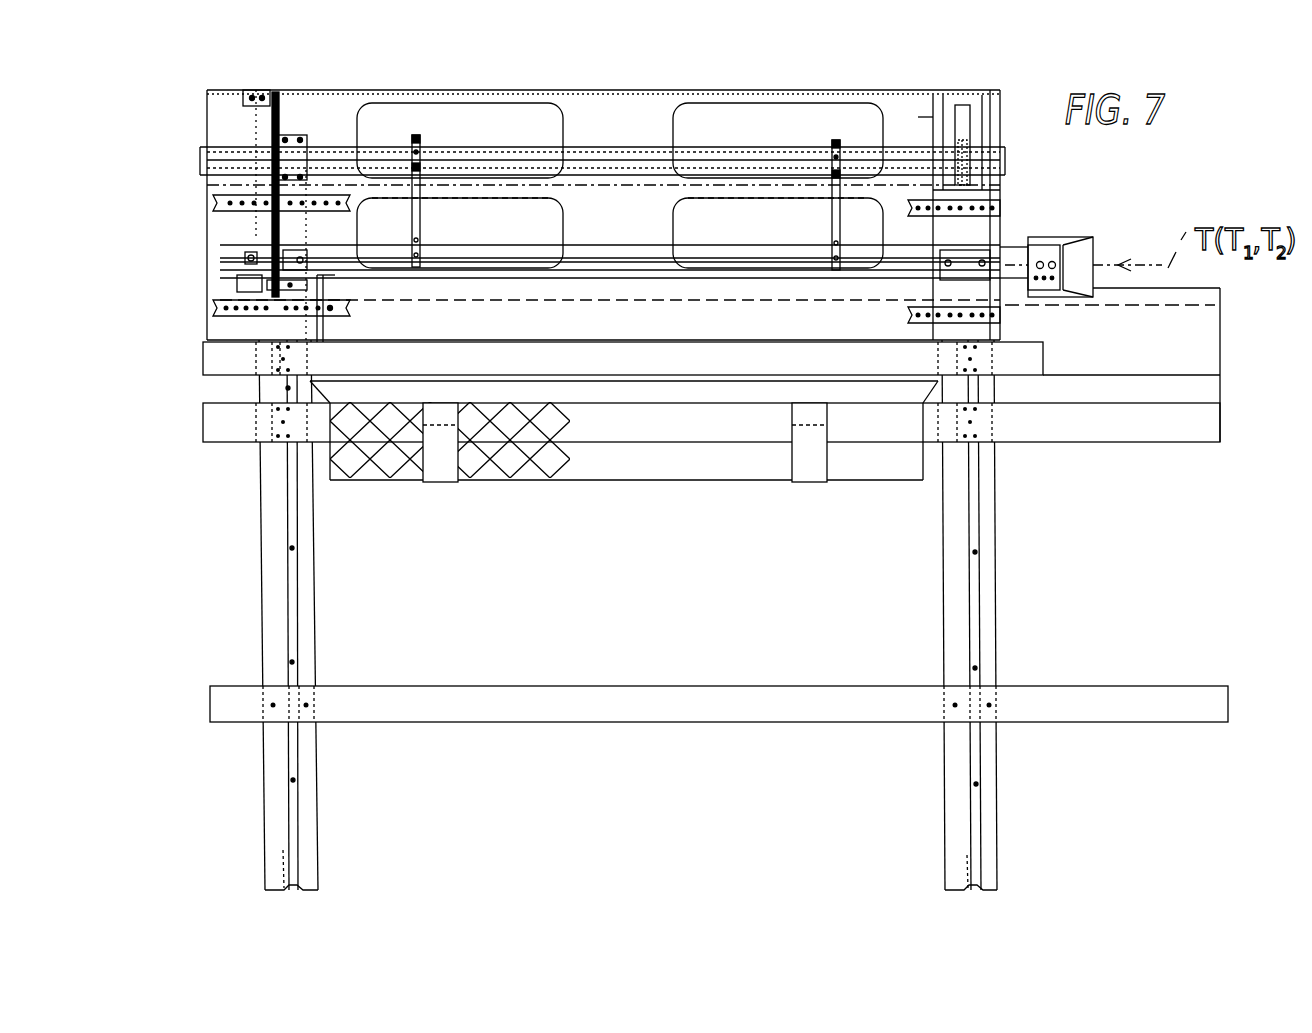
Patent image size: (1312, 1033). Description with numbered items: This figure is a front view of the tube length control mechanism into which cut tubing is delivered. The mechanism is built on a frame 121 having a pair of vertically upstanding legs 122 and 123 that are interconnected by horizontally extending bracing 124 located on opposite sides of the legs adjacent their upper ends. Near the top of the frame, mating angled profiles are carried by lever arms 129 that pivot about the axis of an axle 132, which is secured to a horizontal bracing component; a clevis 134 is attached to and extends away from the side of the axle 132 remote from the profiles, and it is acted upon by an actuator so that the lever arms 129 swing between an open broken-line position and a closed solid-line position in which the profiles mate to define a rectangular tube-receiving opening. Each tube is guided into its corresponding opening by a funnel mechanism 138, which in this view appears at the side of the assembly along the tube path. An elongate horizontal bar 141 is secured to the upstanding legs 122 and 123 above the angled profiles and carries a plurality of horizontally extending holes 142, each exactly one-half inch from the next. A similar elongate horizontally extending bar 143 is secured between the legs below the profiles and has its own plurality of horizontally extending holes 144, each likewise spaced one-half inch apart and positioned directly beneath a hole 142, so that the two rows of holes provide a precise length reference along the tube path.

The frame 121 is at (694, 589).
The vertically upstanding leg 122 is at (262, 522).
The vertically upstanding leg 123 is at (953, 566).
The horizontally extending bracing 124 is at (608, 355).
The lever arm 129 is at (417, 220).
The axle 132 is at (723, 150).
The clevis 134 is at (962, 102).
The funnel mechanism 138 is at (1072, 240).
The elongate horizontal bar 141 is at (340, 200).
The horizontally extending hole 142 is at (318, 200).
The elongate horizontally extending bar 143 is at (216, 313).
The horizontally extending hole 144 is at (330, 312).